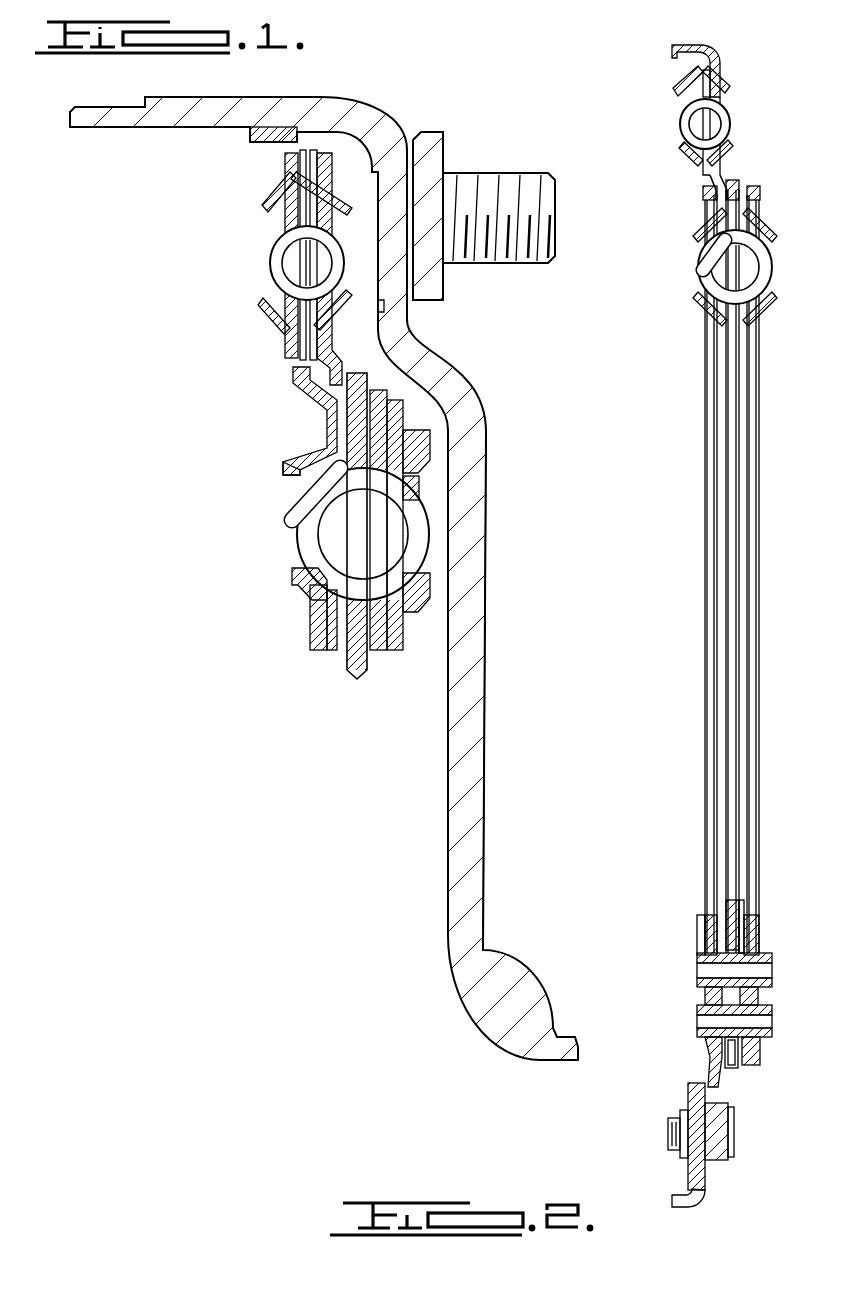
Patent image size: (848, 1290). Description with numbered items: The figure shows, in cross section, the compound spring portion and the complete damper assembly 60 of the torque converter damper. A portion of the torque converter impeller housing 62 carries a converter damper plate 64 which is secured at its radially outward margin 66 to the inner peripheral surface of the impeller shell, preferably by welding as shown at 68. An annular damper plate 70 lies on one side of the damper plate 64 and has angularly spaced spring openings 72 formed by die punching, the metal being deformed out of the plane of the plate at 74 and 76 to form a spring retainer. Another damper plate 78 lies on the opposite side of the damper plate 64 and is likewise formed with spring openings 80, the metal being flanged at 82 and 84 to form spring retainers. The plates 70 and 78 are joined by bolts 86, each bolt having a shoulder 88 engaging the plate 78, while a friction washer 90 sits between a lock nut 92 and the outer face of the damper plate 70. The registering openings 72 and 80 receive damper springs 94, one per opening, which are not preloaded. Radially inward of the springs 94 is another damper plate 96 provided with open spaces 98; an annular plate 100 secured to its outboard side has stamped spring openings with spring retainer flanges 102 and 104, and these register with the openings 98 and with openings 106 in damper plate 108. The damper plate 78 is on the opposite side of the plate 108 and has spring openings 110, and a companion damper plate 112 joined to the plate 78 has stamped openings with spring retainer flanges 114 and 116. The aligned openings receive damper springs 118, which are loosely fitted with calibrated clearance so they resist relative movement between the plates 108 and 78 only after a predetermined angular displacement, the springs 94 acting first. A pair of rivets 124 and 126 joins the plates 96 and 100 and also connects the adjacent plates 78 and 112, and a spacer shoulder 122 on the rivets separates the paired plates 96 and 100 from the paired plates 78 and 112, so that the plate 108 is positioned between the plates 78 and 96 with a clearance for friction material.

In FIG. 1, the damper assembly 60 is at (496, 430).
In FIG. 2, the damper assembly 60 is at (697, 489).
In FIG. 1, the torque converter impeller housing 62 is at (378, 140).
In FIG. 2, the torque converter impeller housing 62 is at (702, 122).
In FIG. 1, the converter damper plate 64 is at (304, 152).
In FIG. 1, the radially outward margin 66 is at (272, 144).
In FIG. 1, the weld 68 is at (247, 133).
In FIG. 1, the annular damper plate 70 is at (275, 190).
In FIG. 1, the spring openings 72 is at (282, 250).
In FIG. 1, the spring retainer (deformed metal) 74 is at (278, 302).
In FIG. 1, the spring retainer (deformed metal) 76 is at (290, 205).
In FIG. 1, the damper plate 78 is at (303, 386).
In FIG. 2, the damper plate 78 is at (708, 918).
In FIG. 1, the spring openings 80 is at (343, 150).
In FIG. 1, the spring retainer flange 82 is at (362, 310).
In FIG. 1, the spring retainer flange 84 is at (352, 206).
In FIG. 2, the bolts 86 is at (720, 1140).
In FIG. 2, the shoulder 88 is at (700, 1096).
In FIG. 2, the friction washer 90 is at (680, 1150).
In FIG. 2, the lock nut 92 is at (682, 1120).
In FIG. 1, the damper springs 94 is at (288, 328).
In FIG. 2, the damper springs 94 is at (730, 120).
In FIG. 1, the damper plate 96 is at (385, 630).
In FIG. 2, the damper plate 96 is at (752, 935).
In FIG. 1, the open spaces 98 is at (430, 490).
In FIG. 1, the annular plate 100 is at (430, 385).
In FIG. 2, the annular plate 100 is at (755, 940).
In FIG. 1, the spring retainer flange 102 is at (430, 456).
In FIG. 1, the spring retainer flange 104 is at (430, 572).
In FIG. 1, the openings 106 is at (305, 500).
In FIG. 1, the damper plate 108 is at (356, 675).
In FIG. 2, the damper plate 108 is at (728, 902).
In FIG. 1, the spring openings 110 is at (302, 480).
In FIG. 1, the companion damper plate 112 is at (318, 603).
In FIG. 2, the companion damper plate 112 is at (706, 930).
In FIG. 1, the spring retainer flange 114 is at (296, 568).
In FIG. 1, the spring retainer flange 116 is at (286, 468).
In FIG. 1, the damper springs 118 is at (315, 642).
In FIG. 2, the damper springs 118 is at (720, 245).
In FIG. 2, the spacer 122 is at (712, 970).
In FIG. 2, the rivet 124 is at (765, 962).
In FIG. 2, the rivet 126 is at (760, 1035).